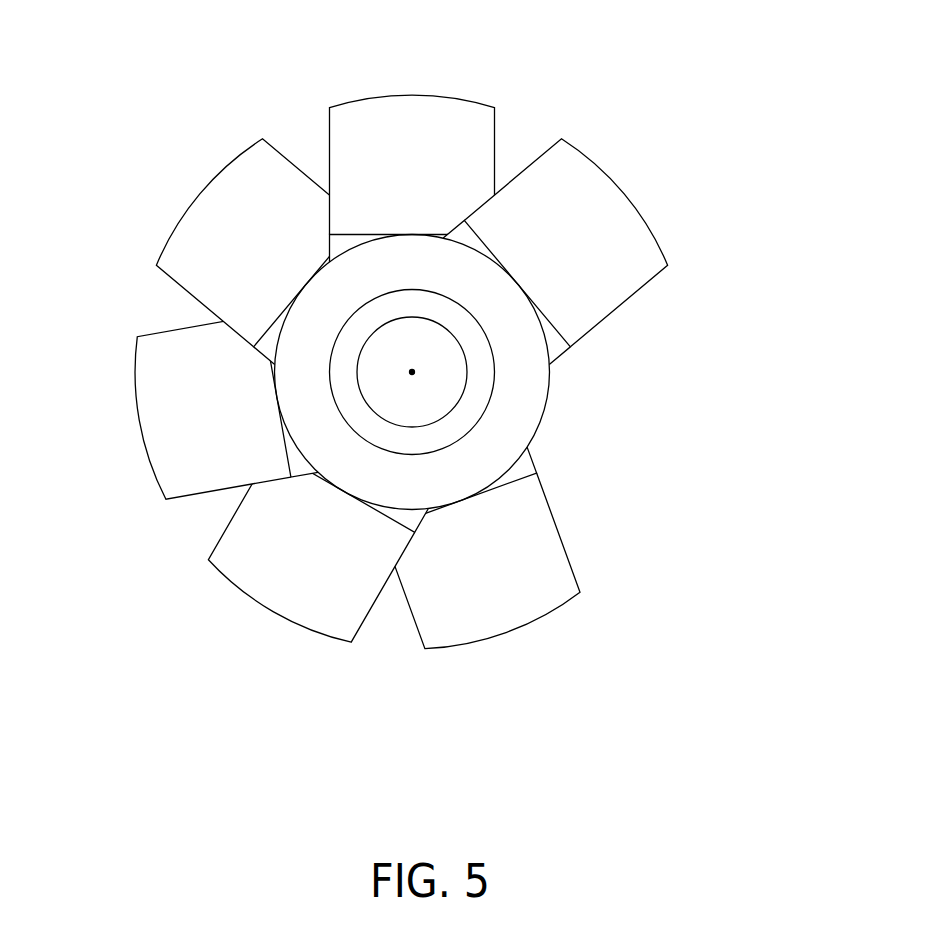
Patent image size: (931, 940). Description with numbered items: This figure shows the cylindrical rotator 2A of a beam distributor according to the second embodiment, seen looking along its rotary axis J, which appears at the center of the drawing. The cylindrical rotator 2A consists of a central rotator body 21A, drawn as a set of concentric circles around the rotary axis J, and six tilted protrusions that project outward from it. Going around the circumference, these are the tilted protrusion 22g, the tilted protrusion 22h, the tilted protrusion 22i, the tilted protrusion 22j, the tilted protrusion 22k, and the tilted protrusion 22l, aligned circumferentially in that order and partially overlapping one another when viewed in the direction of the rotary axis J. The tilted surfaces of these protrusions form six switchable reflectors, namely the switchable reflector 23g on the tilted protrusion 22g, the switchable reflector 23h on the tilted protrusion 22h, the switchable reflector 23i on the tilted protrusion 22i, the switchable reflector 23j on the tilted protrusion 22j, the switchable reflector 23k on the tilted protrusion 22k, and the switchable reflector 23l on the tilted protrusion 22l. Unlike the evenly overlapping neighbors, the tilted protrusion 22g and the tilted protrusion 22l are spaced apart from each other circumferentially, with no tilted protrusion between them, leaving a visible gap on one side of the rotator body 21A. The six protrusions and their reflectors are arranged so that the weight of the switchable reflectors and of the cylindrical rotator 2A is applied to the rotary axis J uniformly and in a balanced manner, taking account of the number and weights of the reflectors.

The cylindrical rotator 2A is at (431, 371).
The rotator body 21A is at (545, 410).
The rotary axis J is at (412, 372).
The tilted protrusion 22g is at (633, 297).
The tilted protrusion 22h is at (497, 157).
The tilted protrusion 22i is at (303, 165).
The tilted protrusion 22j is at (188, 325).
The tilted protrusion 22k is at (233, 518).
The tilted protrusion 22l is at (407, 603).
The switchable reflector 23g is at (617, 213).
The switchable reflector 23h is at (408, 110).
The switchable reflector 23i is at (217, 203).
The switchable reflector 23j is at (157, 405).
The switchable reflector 23k is at (282, 592).
The switchable reflector 23l is at (490, 617).